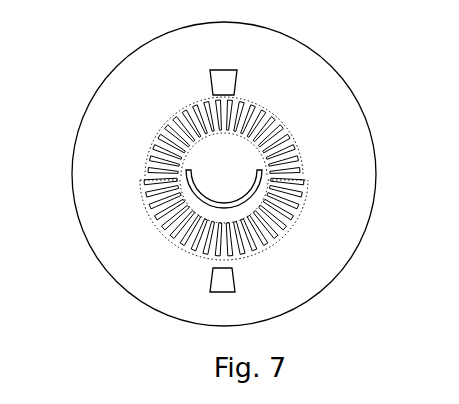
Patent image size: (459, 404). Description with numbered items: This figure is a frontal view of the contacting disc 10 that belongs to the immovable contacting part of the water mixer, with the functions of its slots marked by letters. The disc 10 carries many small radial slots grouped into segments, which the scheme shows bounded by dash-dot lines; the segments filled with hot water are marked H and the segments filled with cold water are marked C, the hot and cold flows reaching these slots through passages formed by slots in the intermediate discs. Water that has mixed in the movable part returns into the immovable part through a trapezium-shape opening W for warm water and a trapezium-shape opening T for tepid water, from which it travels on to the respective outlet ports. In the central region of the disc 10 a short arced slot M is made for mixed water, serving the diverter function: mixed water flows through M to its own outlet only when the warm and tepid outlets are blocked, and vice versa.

The contacting disc 10 is at (333, 63).
The trapezium-shape opening (warm water) W is at (222, 68).
The trapezium-shape opening (tepid water) T is at (236, 278).
The segments filled with cold water C is at (167, 123).
The segments filled with hot water H is at (288, 130).
The short arced slot (mixed water) M is at (204, 203).